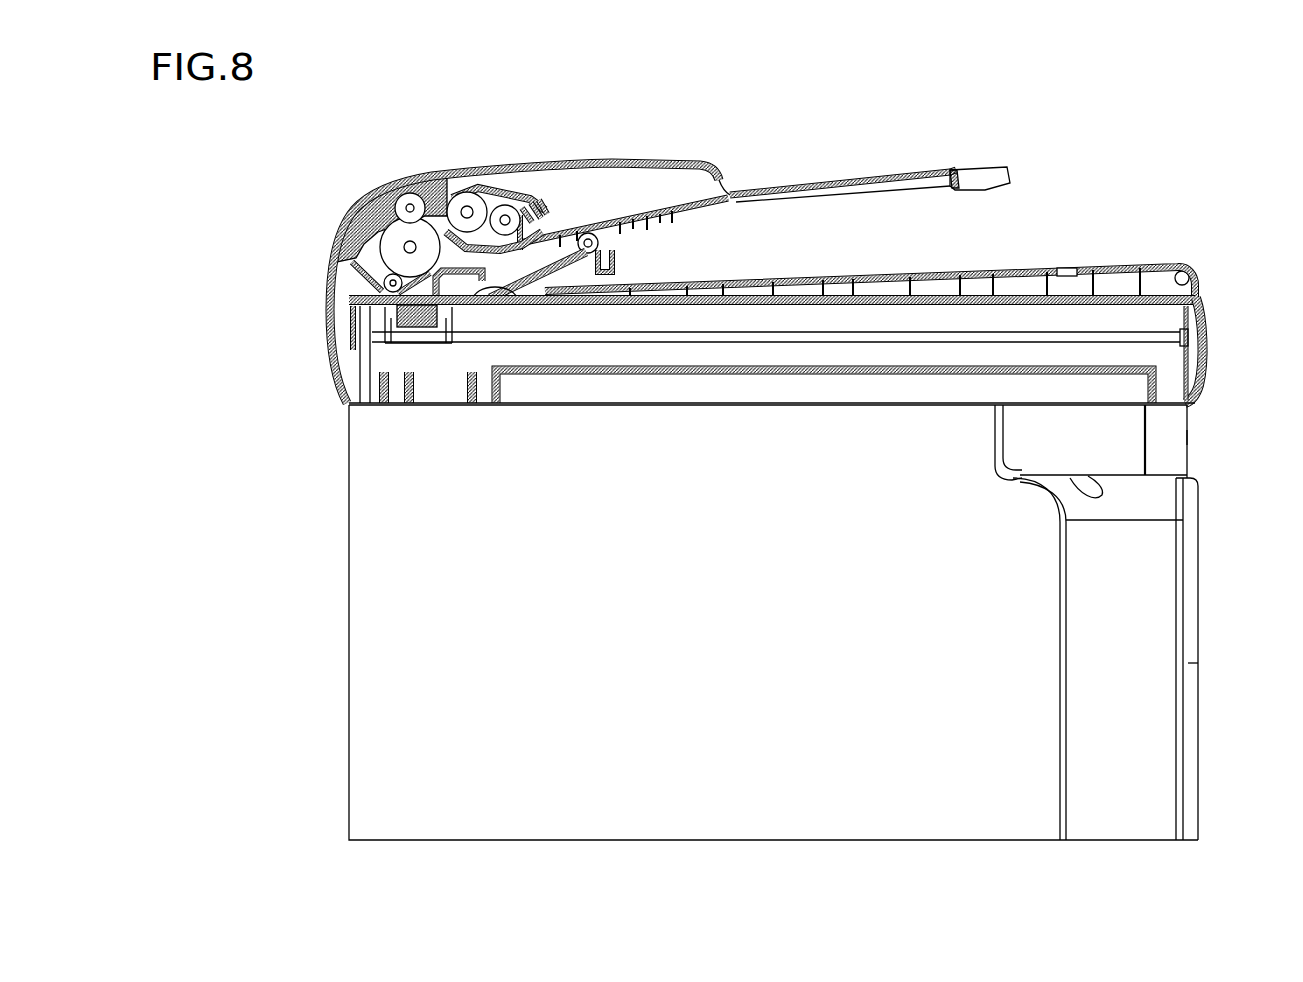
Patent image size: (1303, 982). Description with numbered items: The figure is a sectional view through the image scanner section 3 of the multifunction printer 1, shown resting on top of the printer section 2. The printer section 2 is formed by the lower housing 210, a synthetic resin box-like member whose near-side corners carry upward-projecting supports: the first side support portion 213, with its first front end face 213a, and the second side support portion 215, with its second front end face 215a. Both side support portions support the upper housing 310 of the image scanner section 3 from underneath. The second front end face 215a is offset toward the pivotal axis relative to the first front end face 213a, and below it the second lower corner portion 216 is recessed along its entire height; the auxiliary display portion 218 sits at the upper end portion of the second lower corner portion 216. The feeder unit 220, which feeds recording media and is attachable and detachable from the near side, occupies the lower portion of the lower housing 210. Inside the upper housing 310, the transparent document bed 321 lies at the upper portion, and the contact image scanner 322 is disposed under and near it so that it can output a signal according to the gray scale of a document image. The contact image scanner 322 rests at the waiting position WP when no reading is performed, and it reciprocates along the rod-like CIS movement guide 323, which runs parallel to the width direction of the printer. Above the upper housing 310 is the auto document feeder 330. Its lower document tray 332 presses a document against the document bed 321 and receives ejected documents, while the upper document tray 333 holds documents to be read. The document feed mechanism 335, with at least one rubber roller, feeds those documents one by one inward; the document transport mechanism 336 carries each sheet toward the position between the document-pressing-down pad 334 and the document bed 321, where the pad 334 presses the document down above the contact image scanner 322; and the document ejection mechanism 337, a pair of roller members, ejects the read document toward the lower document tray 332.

The multifunction printer 1 is at (1236, 113).
The printer section 2 is at (1202, 531).
The image scanner section 3 is at (1189, 268).
The lower housing 210 is at (348, 676).
The first side support portion 213 is at (1180, 417).
The first front end face 213a is at (1187, 438).
The second side support portion 215 is at (985, 426).
The second front end face 215a is at (1013, 483).
The second lower corner portion 216 is at (1155, 702).
The auxiliary display portion 218 is at (1093, 486).
The feeder unit 220 is at (1193, 795).
The upper housing 310 is at (1208, 342).
The document bed 321 is at (1041, 306).
The contact image scanner (CIS) 322 is at (416, 328).
The CIS movement guide 323 is at (836, 338).
The auto document feeder (ADF) 330 is at (362, 198).
The lower document tray 332 is at (1190, 288).
The upper document tray 333 is at (978, 172).
The document-pressing-down pad 334 is at (527, 304).
The document feed mechanism 335 is at (487, 192).
The document transport mechanism 336 is at (398, 248).
The document ejection mechanism 337 is at (611, 255).
The waiting position WP is at (418, 350).